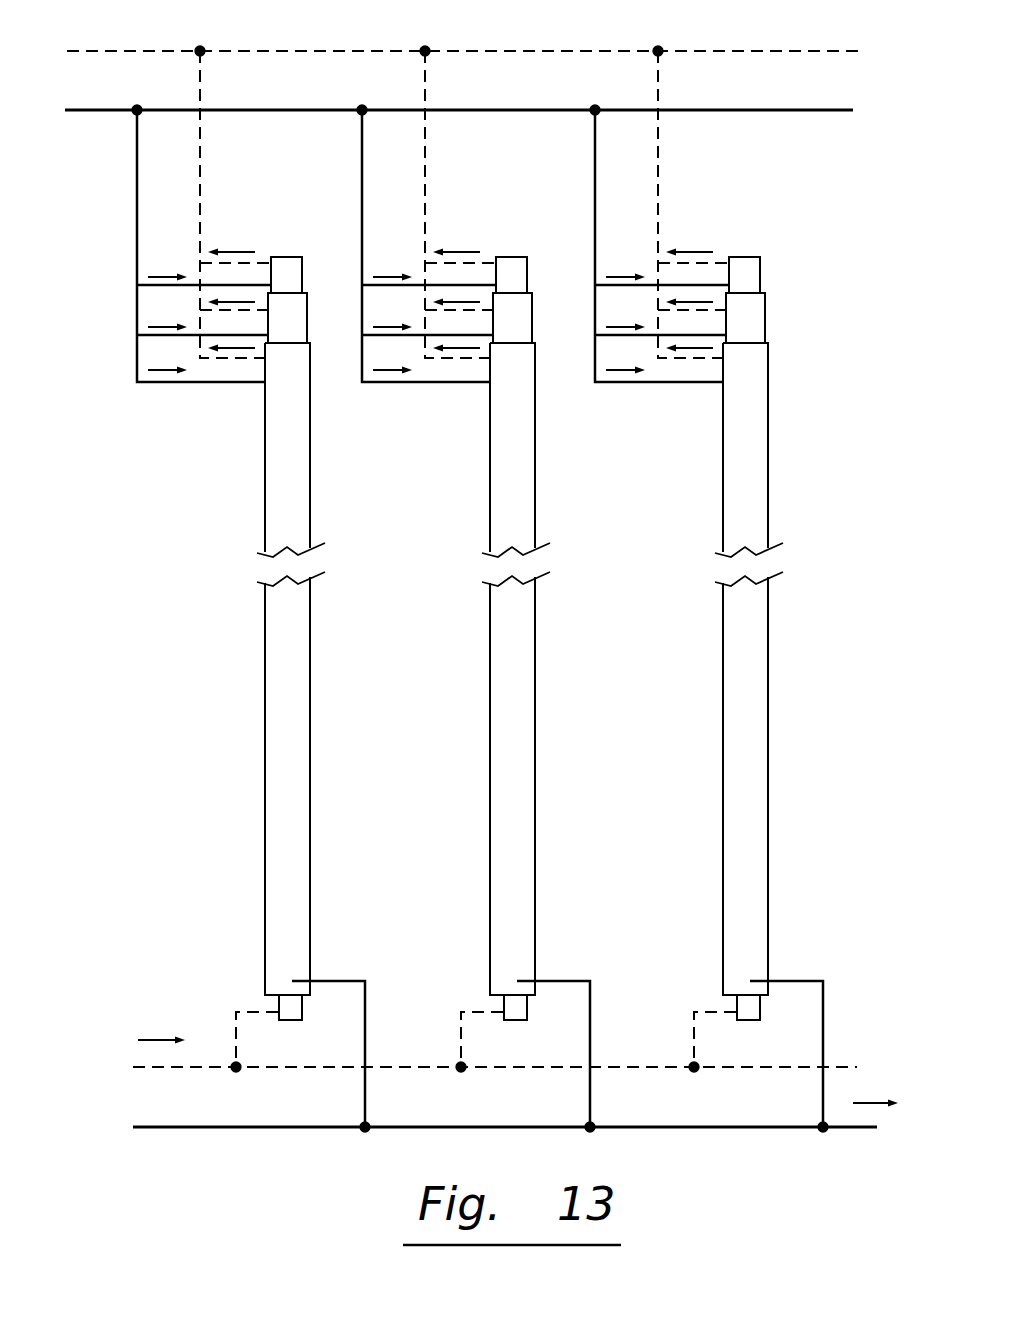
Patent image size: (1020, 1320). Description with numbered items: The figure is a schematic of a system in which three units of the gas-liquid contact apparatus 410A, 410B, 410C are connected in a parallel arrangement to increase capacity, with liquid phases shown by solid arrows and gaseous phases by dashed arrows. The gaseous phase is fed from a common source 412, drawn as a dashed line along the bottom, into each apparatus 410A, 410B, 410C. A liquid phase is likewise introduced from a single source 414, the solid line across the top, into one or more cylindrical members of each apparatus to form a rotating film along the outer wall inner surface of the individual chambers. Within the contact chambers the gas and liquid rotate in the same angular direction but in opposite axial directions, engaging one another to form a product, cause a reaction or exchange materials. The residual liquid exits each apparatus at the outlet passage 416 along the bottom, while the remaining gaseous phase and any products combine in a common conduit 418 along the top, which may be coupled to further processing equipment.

The apparatus unit 410A is at (260, 464).
The apparatus unit 410B is at (485, 464).
The apparatus unit 410C is at (718, 464).
The common source 412 is at (179, 1070).
The single source 414 is at (113, 108).
The outlet passage 416 is at (700, 1125).
The common conduit 418 is at (388, 53).